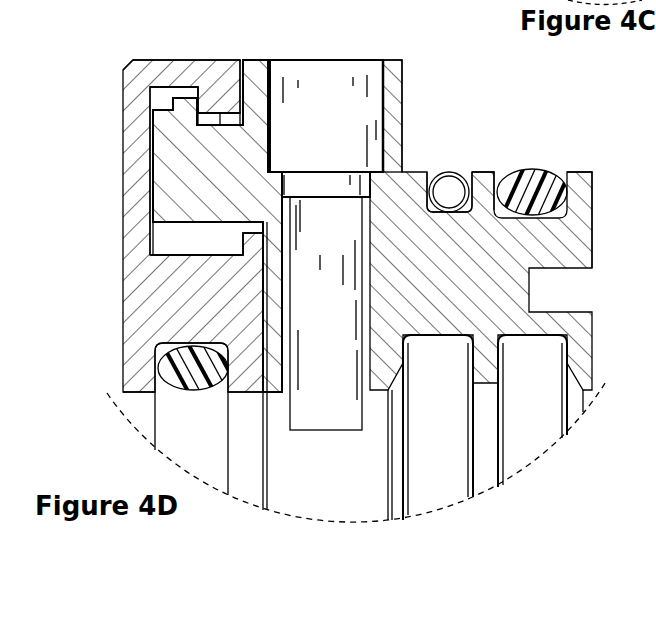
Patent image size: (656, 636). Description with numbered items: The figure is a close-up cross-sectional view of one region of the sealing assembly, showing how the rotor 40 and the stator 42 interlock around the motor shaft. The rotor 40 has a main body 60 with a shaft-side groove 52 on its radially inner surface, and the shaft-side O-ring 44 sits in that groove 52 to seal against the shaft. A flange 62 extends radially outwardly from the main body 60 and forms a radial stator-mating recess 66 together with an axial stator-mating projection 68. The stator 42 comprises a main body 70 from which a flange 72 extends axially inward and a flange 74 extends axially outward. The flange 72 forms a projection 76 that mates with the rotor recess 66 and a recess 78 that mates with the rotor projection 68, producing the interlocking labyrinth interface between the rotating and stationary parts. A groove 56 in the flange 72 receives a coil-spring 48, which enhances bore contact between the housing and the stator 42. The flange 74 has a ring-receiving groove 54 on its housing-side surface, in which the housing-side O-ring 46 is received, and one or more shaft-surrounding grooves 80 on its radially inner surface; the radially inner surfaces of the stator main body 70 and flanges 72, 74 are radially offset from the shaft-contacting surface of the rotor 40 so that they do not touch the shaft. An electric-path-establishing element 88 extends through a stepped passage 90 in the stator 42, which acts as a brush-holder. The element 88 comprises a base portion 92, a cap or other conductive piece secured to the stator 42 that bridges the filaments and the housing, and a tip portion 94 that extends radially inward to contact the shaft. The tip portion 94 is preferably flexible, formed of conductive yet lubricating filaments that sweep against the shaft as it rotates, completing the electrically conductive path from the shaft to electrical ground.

The rotor 40 is at (116, 334).
The stator 42 is at (603, 248).
The shaft-side O-ring 44 is at (185, 378).
The housing-side O-ring 46 is at (557, 182).
The coil-spring 48 is at (452, 170).
The shaft-side groove 52 is at (180, 434).
The ring-receiving groove 54 is at (567, 172).
The spring groove 56 is at (433, 173).
The main body 60 is at (175, 293).
The rotor flange 62 is at (137, 107).
The stator-mating recess 66 is at (181, 249).
The stator-mating projection 68 is at (213, 100).
The stator main body 70 is at (392, 83).
The stator flange 72 is at (257, 80).
The stator flange 74 is at (483, 178).
The projection 76 is at (177, 170).
The recess 78 is at (233, 113).
The shaft-surrounding grooves 80 is at (428, 419).
The electric-path-establishing element 88 is at (326, 50).
The passage 90 is at (375, 72).
The base portion 92 is at (337, 110).
The tip portion 94 is at (325, 403).